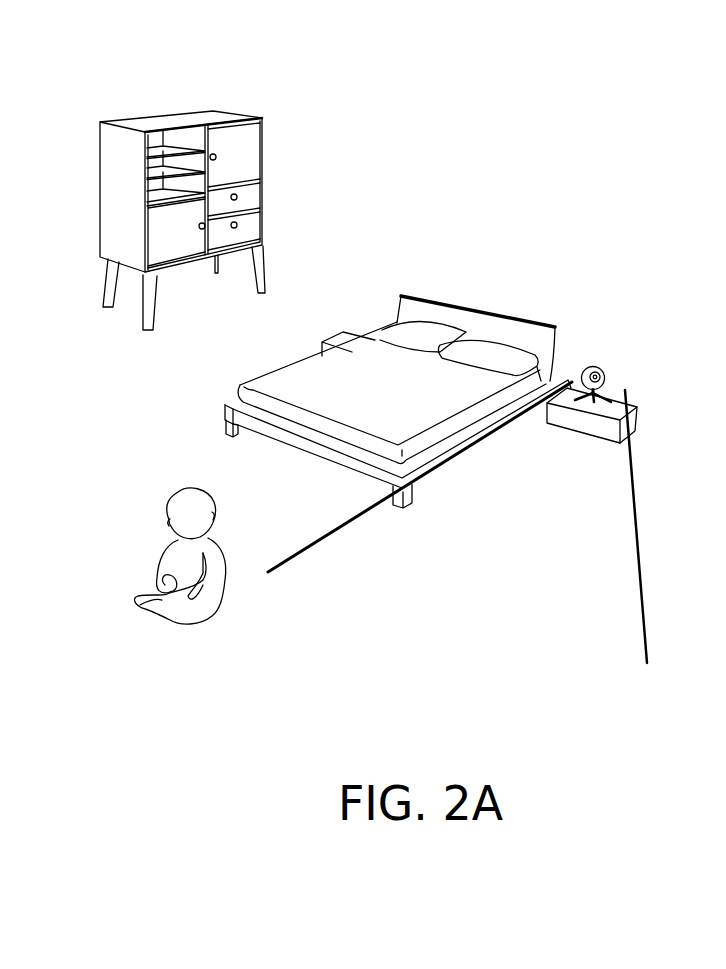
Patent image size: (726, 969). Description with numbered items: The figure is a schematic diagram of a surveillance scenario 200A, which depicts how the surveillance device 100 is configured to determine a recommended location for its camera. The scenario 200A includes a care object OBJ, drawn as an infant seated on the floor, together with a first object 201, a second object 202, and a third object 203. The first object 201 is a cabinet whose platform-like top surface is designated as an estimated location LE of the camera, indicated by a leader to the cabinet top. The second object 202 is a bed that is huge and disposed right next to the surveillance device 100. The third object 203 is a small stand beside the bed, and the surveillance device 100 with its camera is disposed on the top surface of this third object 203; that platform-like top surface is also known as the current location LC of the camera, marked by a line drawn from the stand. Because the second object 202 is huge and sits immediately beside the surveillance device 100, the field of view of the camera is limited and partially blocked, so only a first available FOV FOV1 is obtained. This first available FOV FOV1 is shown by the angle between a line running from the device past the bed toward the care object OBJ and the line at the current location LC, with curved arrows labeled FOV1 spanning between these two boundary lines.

The surveillance device 100 is at (583, 367).
The first object 201 is at (243, 165).
The second object 202 is at (487, 323).
The third object 203 is at (600, 428).
The estimated location LE is at (185, 120).
The current location LC is at (631, 406).
The care object OBJ is at (180, 556).
The first available FOV FOV1 is at (638, 570).
The scenario 200A is at (700, 743).